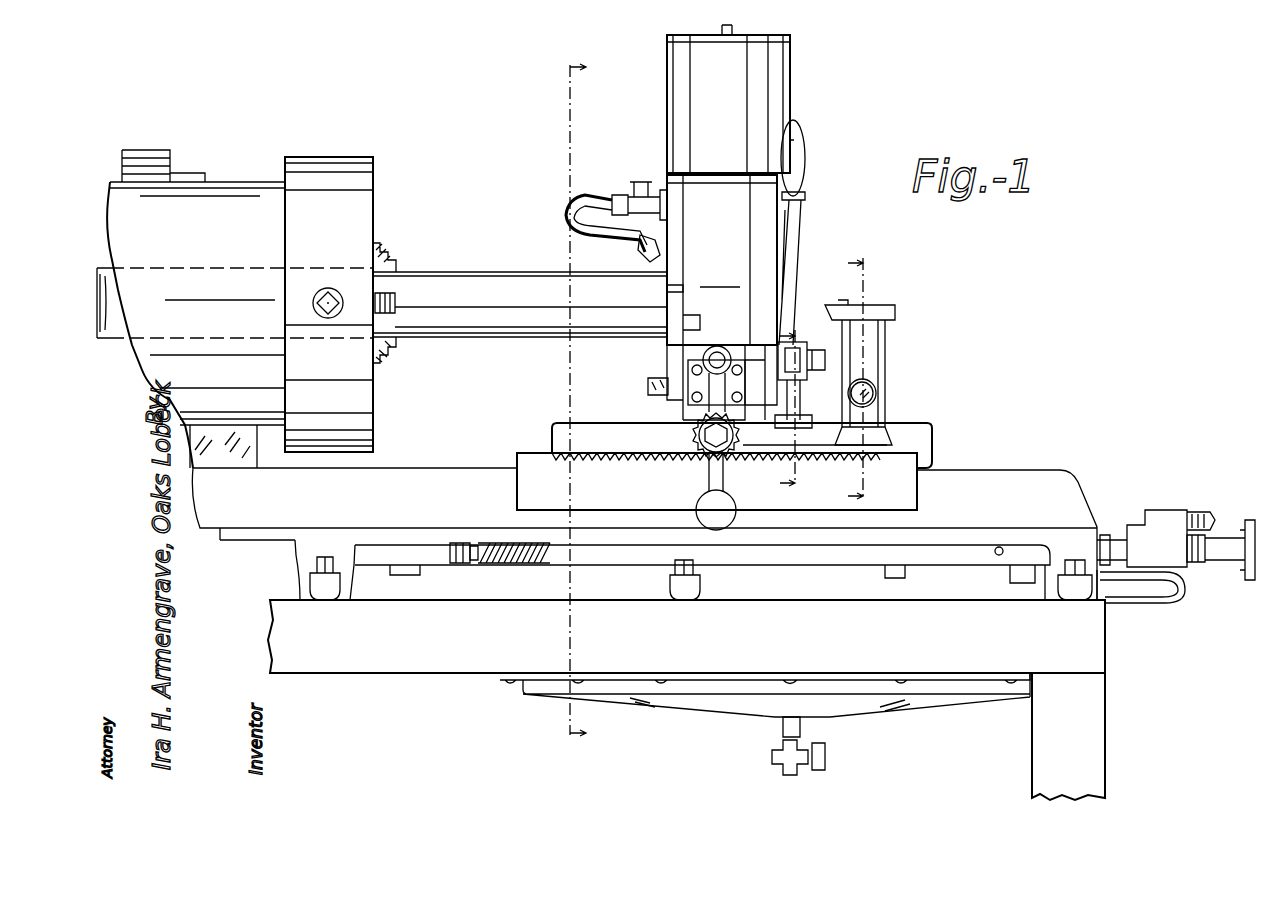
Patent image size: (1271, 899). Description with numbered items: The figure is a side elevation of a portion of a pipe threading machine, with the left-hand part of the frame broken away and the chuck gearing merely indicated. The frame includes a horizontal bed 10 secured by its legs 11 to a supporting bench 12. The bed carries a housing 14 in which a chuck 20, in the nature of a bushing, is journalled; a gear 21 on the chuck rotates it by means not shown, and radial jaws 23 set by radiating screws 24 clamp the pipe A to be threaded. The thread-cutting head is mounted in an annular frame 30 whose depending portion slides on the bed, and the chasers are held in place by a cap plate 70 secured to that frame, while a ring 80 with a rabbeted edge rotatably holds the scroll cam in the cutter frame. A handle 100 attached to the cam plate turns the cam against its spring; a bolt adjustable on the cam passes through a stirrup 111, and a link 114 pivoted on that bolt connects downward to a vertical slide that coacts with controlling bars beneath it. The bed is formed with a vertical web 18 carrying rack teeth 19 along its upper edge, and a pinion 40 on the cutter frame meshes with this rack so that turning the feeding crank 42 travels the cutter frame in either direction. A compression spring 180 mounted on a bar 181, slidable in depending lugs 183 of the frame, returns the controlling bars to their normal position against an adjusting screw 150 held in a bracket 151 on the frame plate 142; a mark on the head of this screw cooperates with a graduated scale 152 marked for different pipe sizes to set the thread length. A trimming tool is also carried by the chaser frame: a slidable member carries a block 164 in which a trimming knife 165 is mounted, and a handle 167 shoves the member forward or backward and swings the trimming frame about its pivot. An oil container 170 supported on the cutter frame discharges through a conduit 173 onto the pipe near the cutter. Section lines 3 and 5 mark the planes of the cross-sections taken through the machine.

The section line 3— 3 is at (586, 401).
The section line 5— 5 is at (780, 407).
The horizontal bed 10 is at (644, 425).
The legs 11 is at (352, 568).
The supporting bench 12 is at (686, 700).
The housing 14 is at (235, 325).
The vertical web 18 is at (717, 481).
The rack teeth 19 is at (625, 460).
The chuck 20 is at (329, 304).
The gear 21 is at (172, 156).
The radial jaws 23 is at (383, 260).
The radiating screws 24 is at (335, 300).
The annular frame 30 is at (712, 297).
The pinion 40 is at (700, 455).
The feeding crank 42 is at (723, 353).
The cap plate 70 is at (666, 289).
The ring 80 is at (770, 243).
The handle 100 is at (802, 152).
The stirrup 111 is at (800, 346).
The link 114 is at (800, 395).
The frame plate 142 is at (980, 568).
The adjusting screw 150 is at (1196, 563).
The bracket 151 is at (1172, 604).
The graduated scale 152 is at (1183, 511).
The block 164 is at (895, 311).
The trimming knife 165 is at (852, 305).
The handle 167 is at (877, 390).
The oil container 170 is at (728, 99).
The conduit 173 is at (600, 204).
The compression spring 180 is at (515, 565).
The bar 181 is at (475, 565).
The depending lugs 183 is at (458, 566).
The pipe A is at (520, 304).